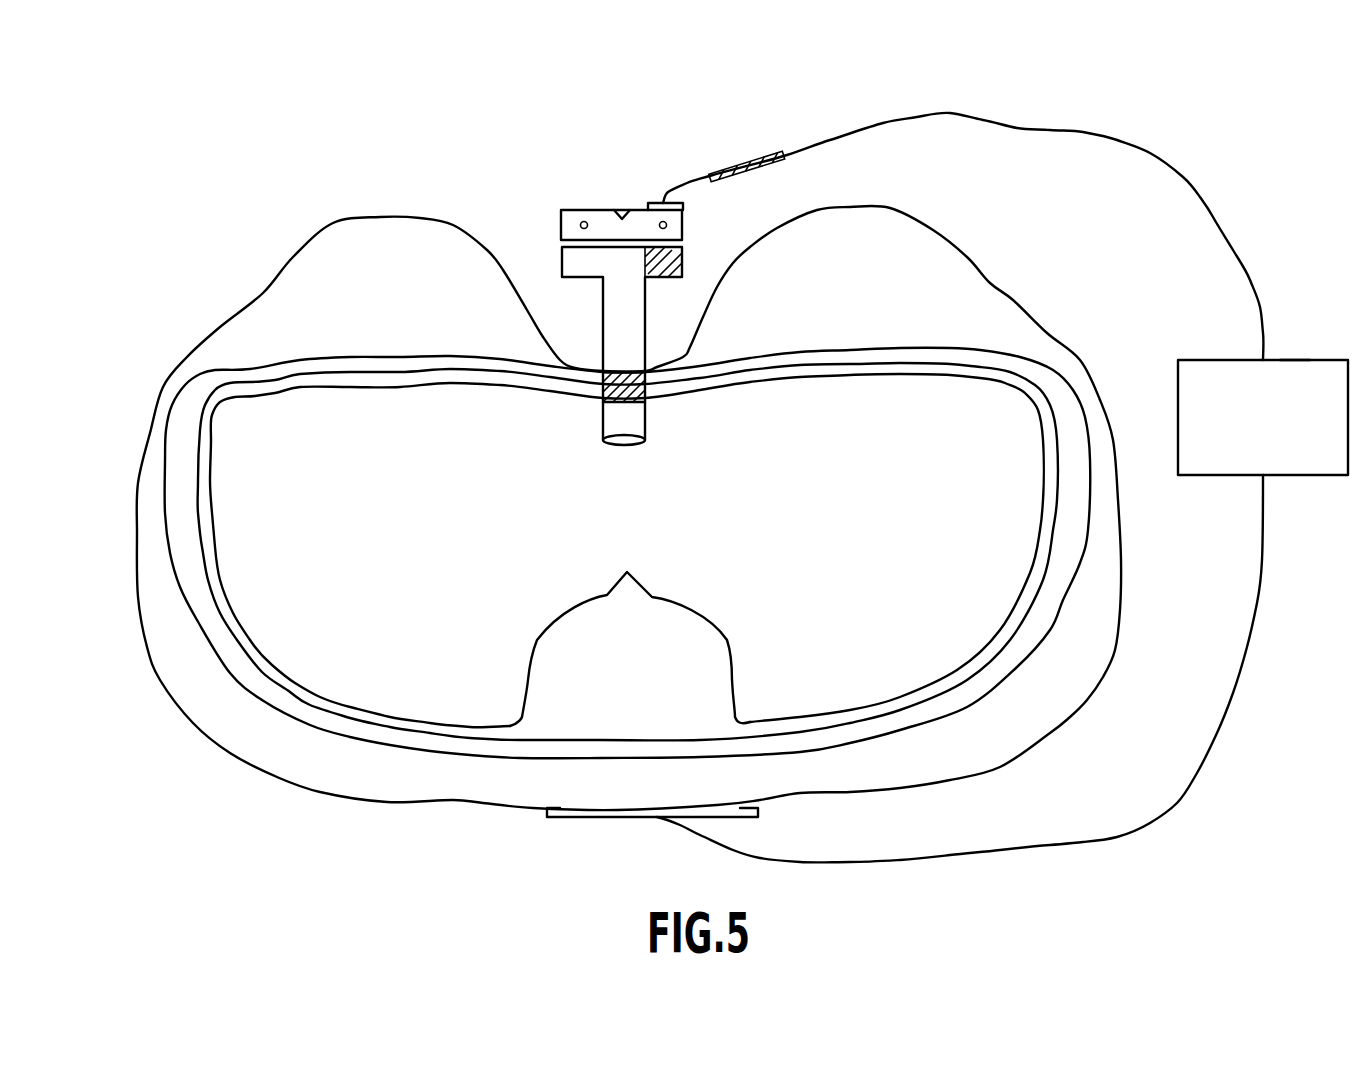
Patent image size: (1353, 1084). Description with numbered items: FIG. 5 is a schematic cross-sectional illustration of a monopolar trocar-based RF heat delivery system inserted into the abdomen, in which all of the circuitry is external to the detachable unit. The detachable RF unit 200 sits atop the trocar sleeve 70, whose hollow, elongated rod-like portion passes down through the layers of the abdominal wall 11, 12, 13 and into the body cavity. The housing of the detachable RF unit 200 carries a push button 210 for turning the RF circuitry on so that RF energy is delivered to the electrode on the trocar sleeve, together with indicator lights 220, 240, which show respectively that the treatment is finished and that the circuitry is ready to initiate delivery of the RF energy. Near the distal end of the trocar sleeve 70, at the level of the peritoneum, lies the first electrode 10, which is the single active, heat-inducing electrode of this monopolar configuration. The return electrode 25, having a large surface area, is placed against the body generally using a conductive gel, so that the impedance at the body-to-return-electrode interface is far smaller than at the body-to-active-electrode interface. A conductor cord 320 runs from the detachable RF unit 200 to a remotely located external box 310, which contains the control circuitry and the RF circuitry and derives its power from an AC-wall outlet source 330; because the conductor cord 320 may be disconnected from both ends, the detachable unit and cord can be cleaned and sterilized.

The first electrode 10 is at (630, 397).
The outer lens frame line 11 is at (1106, 440).
The intermediate lens line 12 is at (1073, 395).
The inner lens line 13 is at (1032, 393).
The return electrode 25 is at (570, 820).
The trocar sleeve 70 is at (625, 307).
The detachable RF unit 200 is at (606, 181).
The push button 210 is at (622, 209).
The indicator light 220 is at (667, 225).
The indicator light 240 is at (580, 225).
The external box 310 is at (1283, 430).
The conductor cord 320 is at (1202, 207).
The AC-wall outlet source 330 is at (1292, 358).